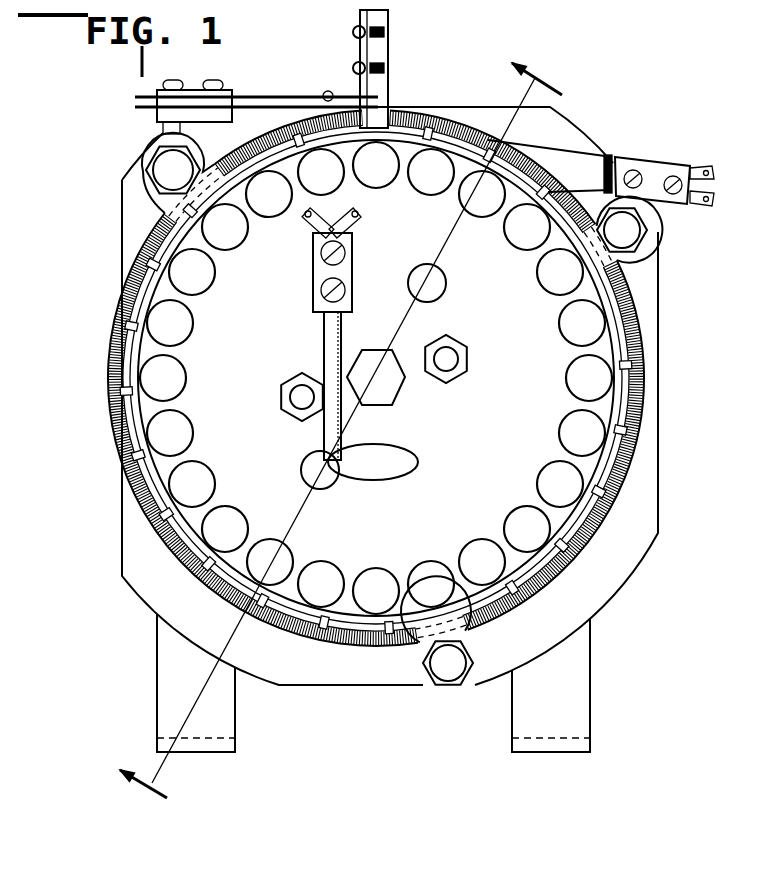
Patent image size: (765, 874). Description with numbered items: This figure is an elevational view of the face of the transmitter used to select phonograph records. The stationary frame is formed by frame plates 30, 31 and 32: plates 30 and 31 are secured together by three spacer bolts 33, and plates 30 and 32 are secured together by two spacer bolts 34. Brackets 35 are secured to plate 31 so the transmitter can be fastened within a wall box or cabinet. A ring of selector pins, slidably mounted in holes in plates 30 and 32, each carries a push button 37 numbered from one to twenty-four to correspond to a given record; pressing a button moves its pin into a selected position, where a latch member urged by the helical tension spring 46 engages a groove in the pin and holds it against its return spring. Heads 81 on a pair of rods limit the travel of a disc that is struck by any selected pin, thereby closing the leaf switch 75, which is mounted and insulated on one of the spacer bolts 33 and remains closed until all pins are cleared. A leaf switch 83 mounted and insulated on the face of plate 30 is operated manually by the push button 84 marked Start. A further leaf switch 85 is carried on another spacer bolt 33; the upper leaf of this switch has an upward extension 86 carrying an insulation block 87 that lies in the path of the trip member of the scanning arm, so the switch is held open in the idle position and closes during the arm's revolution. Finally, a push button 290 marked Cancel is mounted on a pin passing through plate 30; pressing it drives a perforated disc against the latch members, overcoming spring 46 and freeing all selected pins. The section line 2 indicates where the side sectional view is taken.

The frame plate 30 is at (637, 456).
The frame plate 31 is at (658, 362).
The frame plate 32 is at (615, 409).
The spacer bolt 33 is at (162, 176).
The spacer bolt 34 is at (292, 409).
The bracket 35 is at (232, 726).
The push button 37 is at (330, 573).
The helical tension spring 46 is at (643, 330).
The leaf switch 75 is at (577, 172).
The head 81 is at (445, 292).
The leaf switch 83 is at (330, 339).
The push button 84 is at (420, 462).
The leaf switch 85 is at (279, 100).
The upward extension 86 is at (353, 48).
The insulation block 87 is at (388, 52).
The push button 290 is at (395, 401).
The section line 2 is at (341, 439).